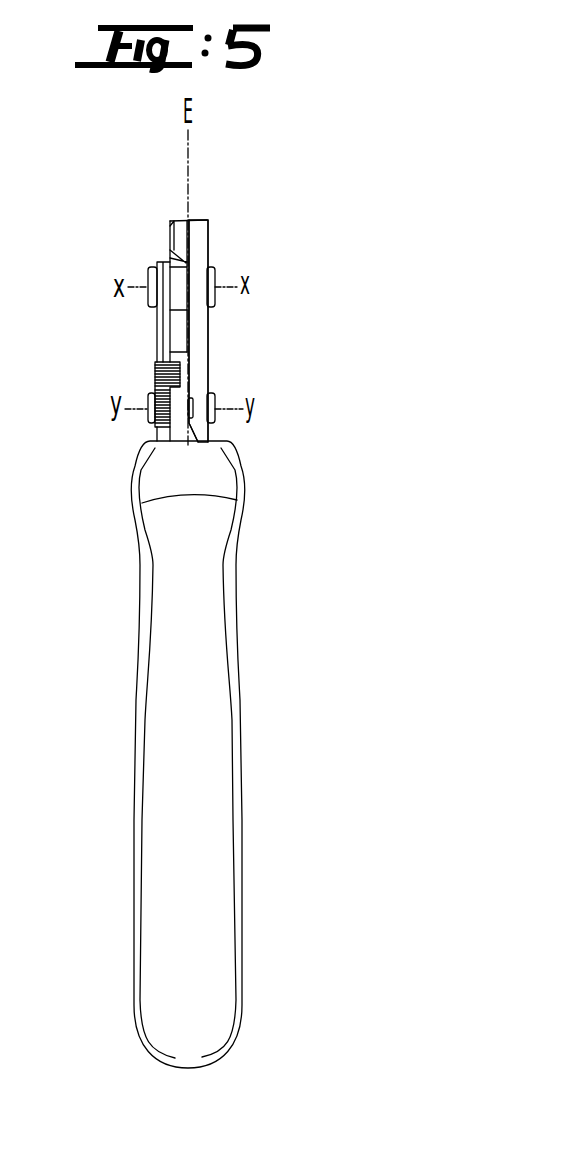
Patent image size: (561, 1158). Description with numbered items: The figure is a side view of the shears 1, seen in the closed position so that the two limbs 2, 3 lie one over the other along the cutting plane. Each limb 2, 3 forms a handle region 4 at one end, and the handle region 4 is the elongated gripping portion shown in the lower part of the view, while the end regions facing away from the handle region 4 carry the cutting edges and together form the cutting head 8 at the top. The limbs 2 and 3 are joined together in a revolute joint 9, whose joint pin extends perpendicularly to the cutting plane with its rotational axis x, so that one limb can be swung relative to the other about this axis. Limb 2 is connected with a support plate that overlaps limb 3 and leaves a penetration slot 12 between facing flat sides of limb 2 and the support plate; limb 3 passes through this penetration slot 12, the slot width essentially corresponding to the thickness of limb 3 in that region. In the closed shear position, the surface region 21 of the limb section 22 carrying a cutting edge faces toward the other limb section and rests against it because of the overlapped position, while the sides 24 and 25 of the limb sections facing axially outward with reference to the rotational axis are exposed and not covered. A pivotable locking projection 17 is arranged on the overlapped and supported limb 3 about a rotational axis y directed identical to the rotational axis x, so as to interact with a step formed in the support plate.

The shears 1 is at (263, 233).
The limb 2 is at (199, 375).
The limb 3 is at (184, 340).
The handle region 4 is at (198, 712).
The cutting head 8 is at (210, 210).
The revolute joint 9 is at (238, 267).
The penetration slot 12 is at (170, 330).
The locking projection 17 is at (157, 383).
The surface region 21 is at (170, 223).
The limb section 22 is at (208, 225).
The side 24 is at (172, 258).
The side 25 is at (207, 247).